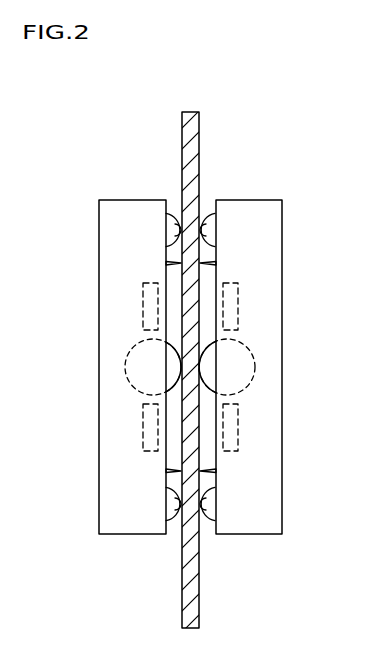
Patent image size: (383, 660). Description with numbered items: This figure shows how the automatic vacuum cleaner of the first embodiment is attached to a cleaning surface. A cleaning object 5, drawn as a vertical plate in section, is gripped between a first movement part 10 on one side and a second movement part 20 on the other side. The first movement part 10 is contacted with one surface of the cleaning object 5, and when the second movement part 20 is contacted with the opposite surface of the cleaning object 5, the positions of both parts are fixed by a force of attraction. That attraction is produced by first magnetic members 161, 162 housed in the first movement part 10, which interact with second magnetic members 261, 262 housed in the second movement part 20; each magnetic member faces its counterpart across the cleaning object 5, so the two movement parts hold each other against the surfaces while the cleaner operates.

The cleaning object 5 is at (186, 112).
The first movement part 10 is at (124, 191).
The second movement part 20 is at (257, 191).
The first magnetic member 161 is at (143, 305).
The first magnetic member 162 is at (143, 431).
The second magnetic member 261 is at (238, 300).
The second magnetic member 262 is at (238, 430).